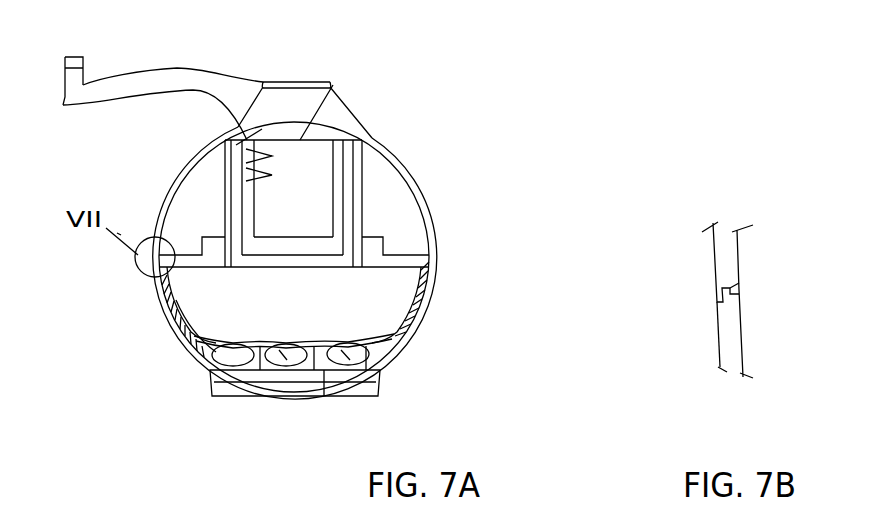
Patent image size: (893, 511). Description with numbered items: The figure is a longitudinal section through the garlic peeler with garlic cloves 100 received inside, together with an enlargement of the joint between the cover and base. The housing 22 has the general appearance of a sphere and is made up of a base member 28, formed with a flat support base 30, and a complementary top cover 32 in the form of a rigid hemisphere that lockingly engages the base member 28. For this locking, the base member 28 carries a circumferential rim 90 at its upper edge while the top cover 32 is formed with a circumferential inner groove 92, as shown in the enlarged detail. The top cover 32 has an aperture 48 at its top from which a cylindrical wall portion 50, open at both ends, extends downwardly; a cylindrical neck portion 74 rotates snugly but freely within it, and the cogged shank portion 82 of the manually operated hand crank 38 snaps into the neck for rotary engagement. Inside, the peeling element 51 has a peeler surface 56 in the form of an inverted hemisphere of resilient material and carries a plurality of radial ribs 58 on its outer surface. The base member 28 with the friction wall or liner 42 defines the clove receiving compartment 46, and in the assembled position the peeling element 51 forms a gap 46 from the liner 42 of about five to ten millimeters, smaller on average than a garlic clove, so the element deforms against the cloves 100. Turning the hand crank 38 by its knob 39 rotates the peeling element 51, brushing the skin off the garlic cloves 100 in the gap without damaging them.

In FIG. 7A, the housing 22 is at (464, 192).
In FIG. 7A, the base member 28 is at (431, 283).
In FIG. 7B, the base member 28 is at (718, 342).
In FIG. 7A, the flat support base 30 is at (228, 383).
In FIG. 7A, the top cover 32 is at (392, 158).
In FIG. 7B, the top cover 32 is at (718, 270).
In FIG. 7A, the hand crank 38 is at (121, 92).
In FIG. 7A, the knob 39 is at (74, 57).
In FIG. 7A, the friction wall (liner) 42 is at (172, 300).
In FIG. 7A, the clove receiving compartment (gap) 46 is at (397, 317).
In FIG. 7A, the aperture 48 is at (333, 83).
In FIG. 7A, the cylindrical wall portion 50 is at (246, 157).
In FIG. 7A, the peeling element 51 is at (256, 370).
In FIG. 7A, the peeler surface 56 is at (318, 347).
In FIG. 7A, the radial ribs 58 is at (170, 292).
In FIG. 7A, the cylindrical neck portion 74 is at (225, 215).
In FIG. 7A, the cogged shank portion 82 is at (275, 140).
In FIG. 7B, the circumferential rim 90 is at (736, 292).
In FIG. 7B, the circumferential inner groove 92 is at (731, 286).
In FIG. 7A, the garlic cloves 100 is at (285, 360).